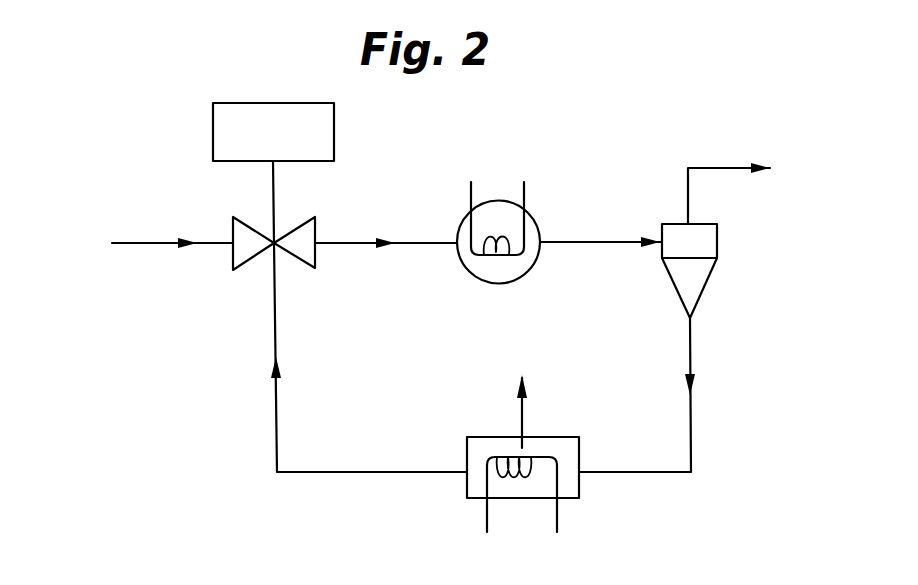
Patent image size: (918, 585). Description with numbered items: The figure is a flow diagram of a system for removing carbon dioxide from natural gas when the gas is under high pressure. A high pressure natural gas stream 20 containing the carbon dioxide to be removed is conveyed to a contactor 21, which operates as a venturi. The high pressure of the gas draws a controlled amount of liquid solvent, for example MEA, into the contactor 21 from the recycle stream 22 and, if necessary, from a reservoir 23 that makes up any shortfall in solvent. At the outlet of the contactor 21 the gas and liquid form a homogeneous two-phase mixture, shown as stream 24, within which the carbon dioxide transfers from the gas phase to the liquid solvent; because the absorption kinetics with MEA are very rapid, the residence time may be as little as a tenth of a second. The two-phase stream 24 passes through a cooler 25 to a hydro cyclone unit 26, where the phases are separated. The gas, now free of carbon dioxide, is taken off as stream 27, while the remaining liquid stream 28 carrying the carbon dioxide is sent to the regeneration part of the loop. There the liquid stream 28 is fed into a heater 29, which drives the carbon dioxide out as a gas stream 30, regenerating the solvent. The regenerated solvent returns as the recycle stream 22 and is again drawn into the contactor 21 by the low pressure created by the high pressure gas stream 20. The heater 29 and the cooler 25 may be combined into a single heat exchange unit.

The high pressure natural gas stream 20 is at (153, 243).
The contactor 21 is at (233, 270).
The recycle stream 22 is at (276, 340).
The reservoir 23 is at (334, 150).
The stream 24 is at (422, 243).
The cooler 25 is at (537, 226).
The hydro cyclone unit 26 is at (694, 291).
The stream 27 is at (745, 189).
The liquid stream 28 is at (692, 360).
The heater 29 is at (580, 483).
The gas stream 30 is at (520, 398).